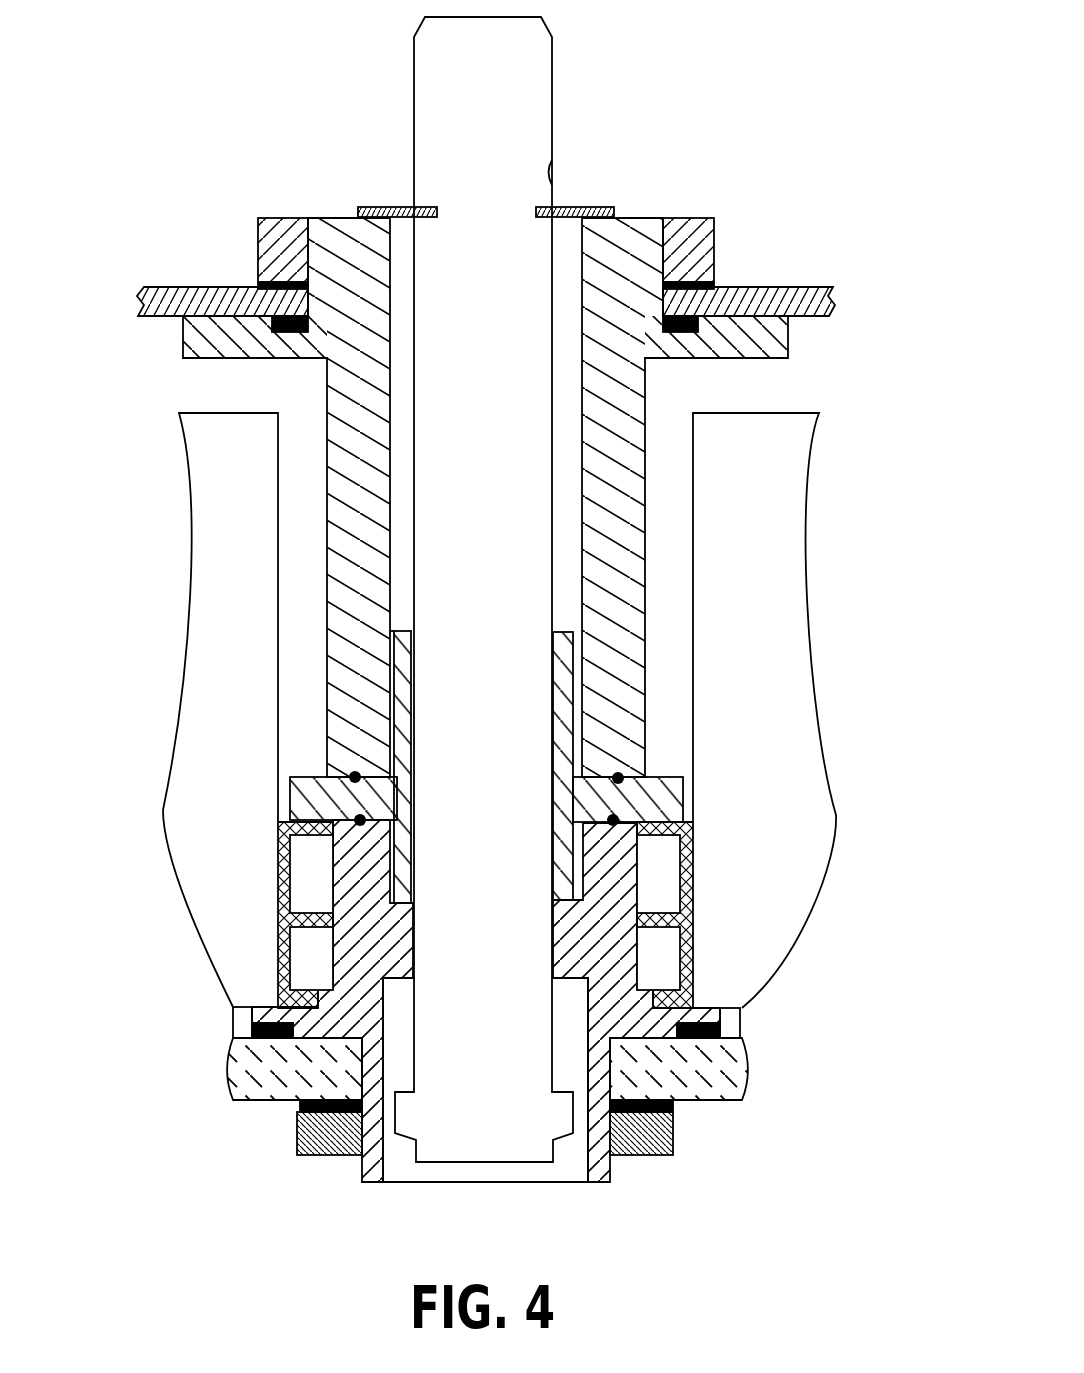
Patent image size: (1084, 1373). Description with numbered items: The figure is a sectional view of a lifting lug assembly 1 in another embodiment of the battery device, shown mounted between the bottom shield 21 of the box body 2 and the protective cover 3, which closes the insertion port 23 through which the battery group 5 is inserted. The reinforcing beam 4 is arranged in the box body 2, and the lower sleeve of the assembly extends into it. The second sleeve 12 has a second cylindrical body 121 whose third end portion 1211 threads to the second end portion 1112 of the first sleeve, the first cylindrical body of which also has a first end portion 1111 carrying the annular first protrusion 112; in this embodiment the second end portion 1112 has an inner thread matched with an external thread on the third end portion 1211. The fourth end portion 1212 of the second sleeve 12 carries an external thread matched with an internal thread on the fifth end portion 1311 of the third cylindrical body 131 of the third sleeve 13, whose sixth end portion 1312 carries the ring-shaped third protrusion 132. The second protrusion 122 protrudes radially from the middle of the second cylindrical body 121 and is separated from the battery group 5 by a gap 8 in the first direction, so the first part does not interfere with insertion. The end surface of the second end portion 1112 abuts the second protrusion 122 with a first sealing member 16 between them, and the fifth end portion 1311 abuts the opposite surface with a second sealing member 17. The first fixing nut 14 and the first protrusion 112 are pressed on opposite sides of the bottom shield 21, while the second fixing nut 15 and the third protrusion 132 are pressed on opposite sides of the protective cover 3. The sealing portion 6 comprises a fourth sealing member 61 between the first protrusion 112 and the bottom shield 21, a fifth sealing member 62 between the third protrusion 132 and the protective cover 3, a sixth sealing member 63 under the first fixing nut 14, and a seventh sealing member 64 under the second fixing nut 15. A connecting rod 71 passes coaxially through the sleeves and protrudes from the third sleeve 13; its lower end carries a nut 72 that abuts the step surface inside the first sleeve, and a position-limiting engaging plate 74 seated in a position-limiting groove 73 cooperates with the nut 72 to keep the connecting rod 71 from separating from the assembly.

The lifting lug assembly 1 is at (636, 152).
The box body 2 is at (509, 1081).
The protective cover 3 is at (805, 305).
The reinforcing beam 4 is at (690, 915).
The battery group 5 is at (200, 458).
The sealing portion 6 is at (496, 620).
The gap 8 is at (288, 809).
The second sleeve 12 is at (228, 700).
The third sleeve 13 is at (758, 559).
The first fixing nut 14 is at (305, 1135).
The second fixing nut 15 is at (690, 260).
The first sealing member 16 is at (615, 818).
The second sealing member 17 is at (622, 777).
The bottom shield 21 is at (720, 1085).
The insertion port 23 is at (496, 252).
The fourth sealing member 61 is at (270, 1027).
The fifth sealing member 62 is at (292, 333).
The sixth sealing member 63 is at (650, 1118).
The seventh sealing member 64 is at (273, 282).
The connecting rod 71 is at (532, 118).
The nut 72 is at (508, 1143).
The position-limiting groove 73 is at (422, 192).
The position-limiting engaging plate 74 is at (388, 207).
The first protrusion 112 is at (693, 1017).
The second cylindrical body 121 is at (228, 824).
The second protrusion 122 is at (300, 790).
The third cylindrical body 131 is at (742, 559).
The third protrusion 132 is at (775, 350).
The first end portion 1111 is at (600, 990).
The second end portion 1112 is at (590, 893).
The third end portion 1211 is at (400, 885).
The fourth end portion 1212 is at (395, 665).
The fifth end portion 1311 is at (612, 692).
The sixth end portion 1312 is at (612, 400).